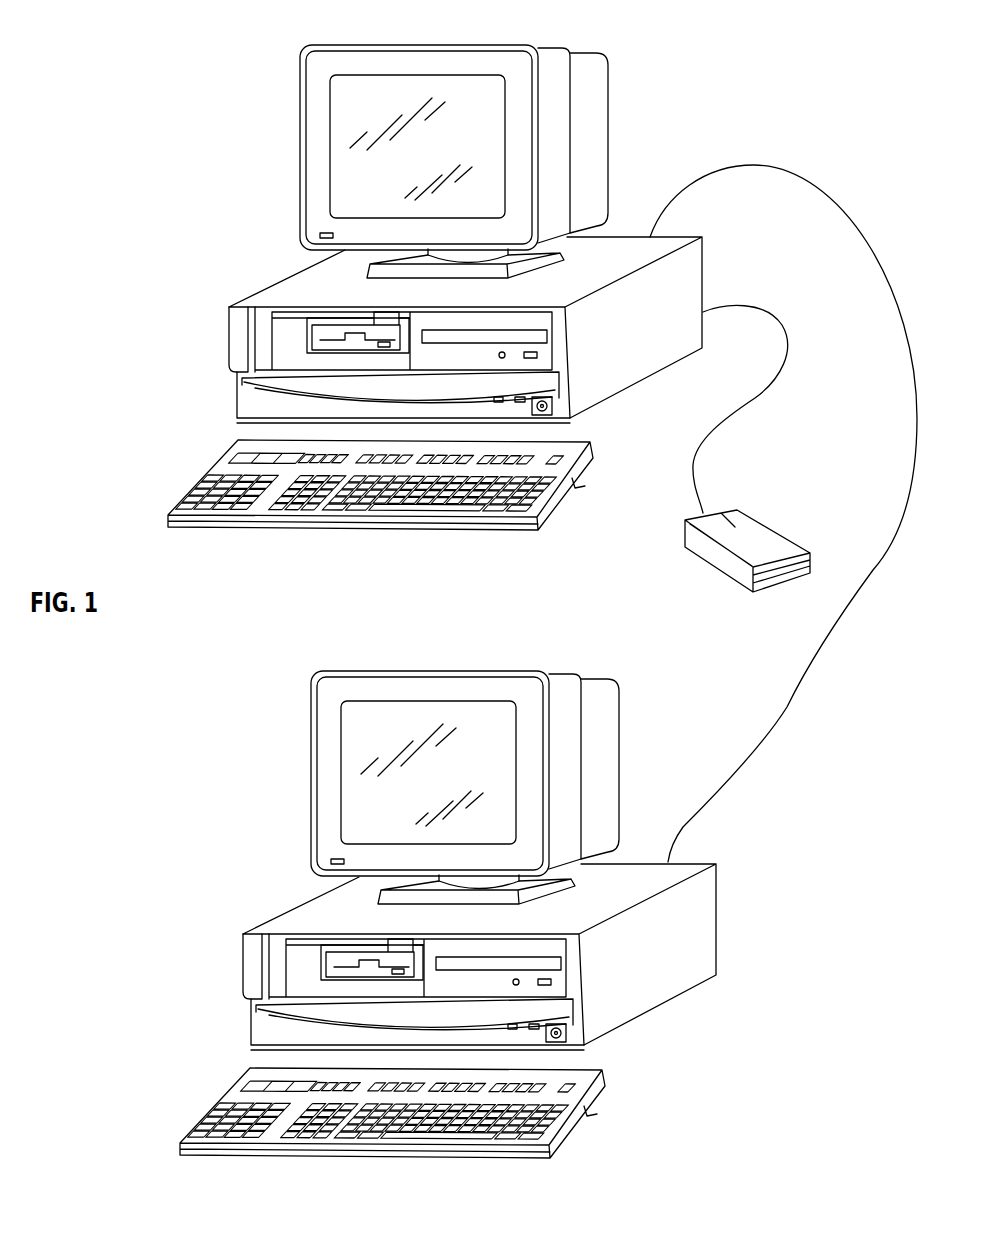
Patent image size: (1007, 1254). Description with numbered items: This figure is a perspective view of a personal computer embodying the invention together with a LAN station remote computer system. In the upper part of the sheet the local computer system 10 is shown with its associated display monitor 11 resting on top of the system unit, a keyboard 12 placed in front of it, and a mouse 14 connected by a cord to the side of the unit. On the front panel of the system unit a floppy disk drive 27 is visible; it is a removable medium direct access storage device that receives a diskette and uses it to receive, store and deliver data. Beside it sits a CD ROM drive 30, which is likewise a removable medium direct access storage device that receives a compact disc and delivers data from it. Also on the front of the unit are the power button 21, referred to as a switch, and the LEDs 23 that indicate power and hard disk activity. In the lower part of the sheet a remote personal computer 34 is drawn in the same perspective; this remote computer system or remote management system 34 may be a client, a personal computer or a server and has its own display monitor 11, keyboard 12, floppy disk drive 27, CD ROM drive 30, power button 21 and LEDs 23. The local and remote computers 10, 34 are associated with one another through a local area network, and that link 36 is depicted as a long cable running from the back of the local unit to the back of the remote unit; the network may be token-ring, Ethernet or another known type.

The computer system 10 is at (195, 122).
The display monitor 11 is at (608, 83).
The keyboard 12 is at (430, 533).
The mouse 14 is at (780, 527).
The power button 21 is at (553, 406).
The LEDs 23 is at (505, 400).
The floppy disk drive 27 is at (327, 343).
The CD ROM drive 30 is at (547, 355).
The remote personal computer 34 is at (243, 739).
The link 36 is at (793, 177).